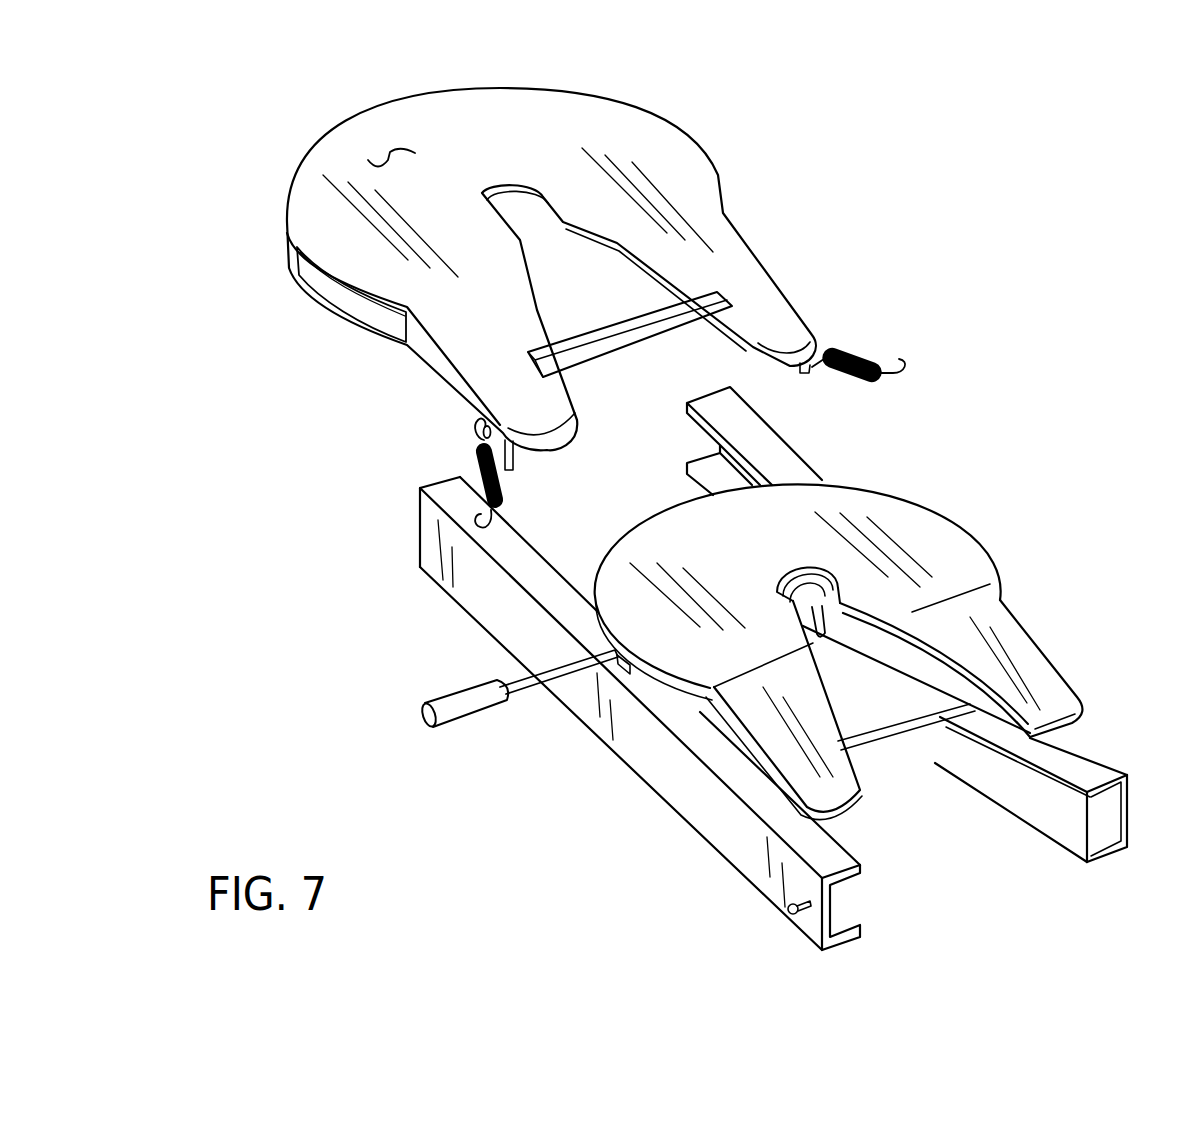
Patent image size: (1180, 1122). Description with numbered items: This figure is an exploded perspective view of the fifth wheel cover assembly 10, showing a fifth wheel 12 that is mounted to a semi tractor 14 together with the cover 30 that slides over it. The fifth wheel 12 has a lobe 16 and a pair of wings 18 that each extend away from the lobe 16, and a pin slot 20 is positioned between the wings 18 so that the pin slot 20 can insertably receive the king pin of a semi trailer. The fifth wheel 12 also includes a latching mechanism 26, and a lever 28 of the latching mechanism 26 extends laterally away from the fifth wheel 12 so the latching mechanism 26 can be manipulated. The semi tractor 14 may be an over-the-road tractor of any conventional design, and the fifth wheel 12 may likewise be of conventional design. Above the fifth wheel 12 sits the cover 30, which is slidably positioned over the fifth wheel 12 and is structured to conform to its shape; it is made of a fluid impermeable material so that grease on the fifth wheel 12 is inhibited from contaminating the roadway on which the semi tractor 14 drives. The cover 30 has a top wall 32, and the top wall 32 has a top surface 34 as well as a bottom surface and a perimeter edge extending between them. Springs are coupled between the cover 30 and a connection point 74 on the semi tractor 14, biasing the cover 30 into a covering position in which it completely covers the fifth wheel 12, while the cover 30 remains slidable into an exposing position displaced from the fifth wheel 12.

The fifth wheel cover assembly 10 is at (1058, 254).
The fifth wheel 12 is at (973, 540).
The semi tractor 14 is at (372, 561).
The lobe 16 is at (838, 483).
The wings 18 is at (1047, 662).
The pin slot 20 is at (818, 575).
The latching mechanism 26 is at (835, 632).
The lever 28 is at (523, 703).
The cover 30 is at (680, 165).
The top wall 32 is at (535, 113).
The top surface 34 is at (390, 155).
The connection point 74 is at (790, 910).